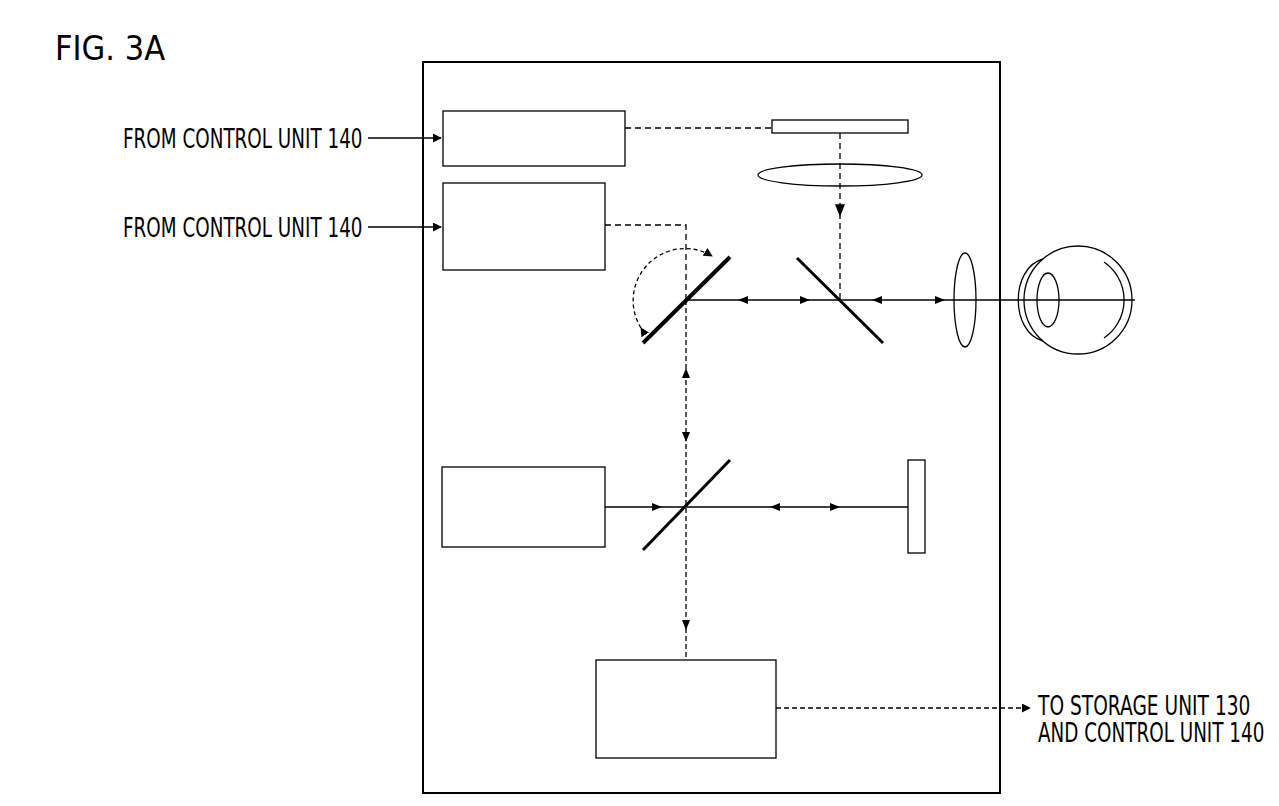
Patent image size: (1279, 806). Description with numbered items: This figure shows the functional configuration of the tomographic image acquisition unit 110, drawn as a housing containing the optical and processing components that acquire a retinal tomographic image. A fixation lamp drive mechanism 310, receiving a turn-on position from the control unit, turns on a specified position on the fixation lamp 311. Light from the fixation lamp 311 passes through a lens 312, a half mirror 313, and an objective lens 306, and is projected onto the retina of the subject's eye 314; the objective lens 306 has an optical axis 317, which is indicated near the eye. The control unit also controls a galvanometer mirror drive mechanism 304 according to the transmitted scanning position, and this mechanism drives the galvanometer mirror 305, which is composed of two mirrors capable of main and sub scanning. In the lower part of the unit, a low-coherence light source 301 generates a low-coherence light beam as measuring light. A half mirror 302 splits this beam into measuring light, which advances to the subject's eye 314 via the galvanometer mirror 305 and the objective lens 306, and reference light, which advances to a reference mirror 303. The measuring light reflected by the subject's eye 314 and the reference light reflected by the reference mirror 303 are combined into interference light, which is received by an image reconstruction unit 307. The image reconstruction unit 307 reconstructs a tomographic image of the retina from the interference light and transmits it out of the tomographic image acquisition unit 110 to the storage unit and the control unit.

The tomographic image acquisition unit 110 is at (711, 398).
The low-coherence light source 301 is at (523, 480).
The half mirror 302 is at (710, 482).
The reference mirror 303 is at (918, 483).
The galvanometer mirror drive mechanism 304 is at (564, 239).
The galvanometer mirror 305 is at (667, 320).
The objective lens 306 is at (966, 277).
The image reconstruction unit 307 is at (686, 683).
The fixation lamp drive mechanism 310 is at (565, 132).
The fixation lamp 311 is at (781, 103).
The lens 312 is at (858, 157).
The half mirror 313 is at (840, 324).
The subject's eye 314 is at (1075, 268).
The optical axis 317 is at (1039, 365).